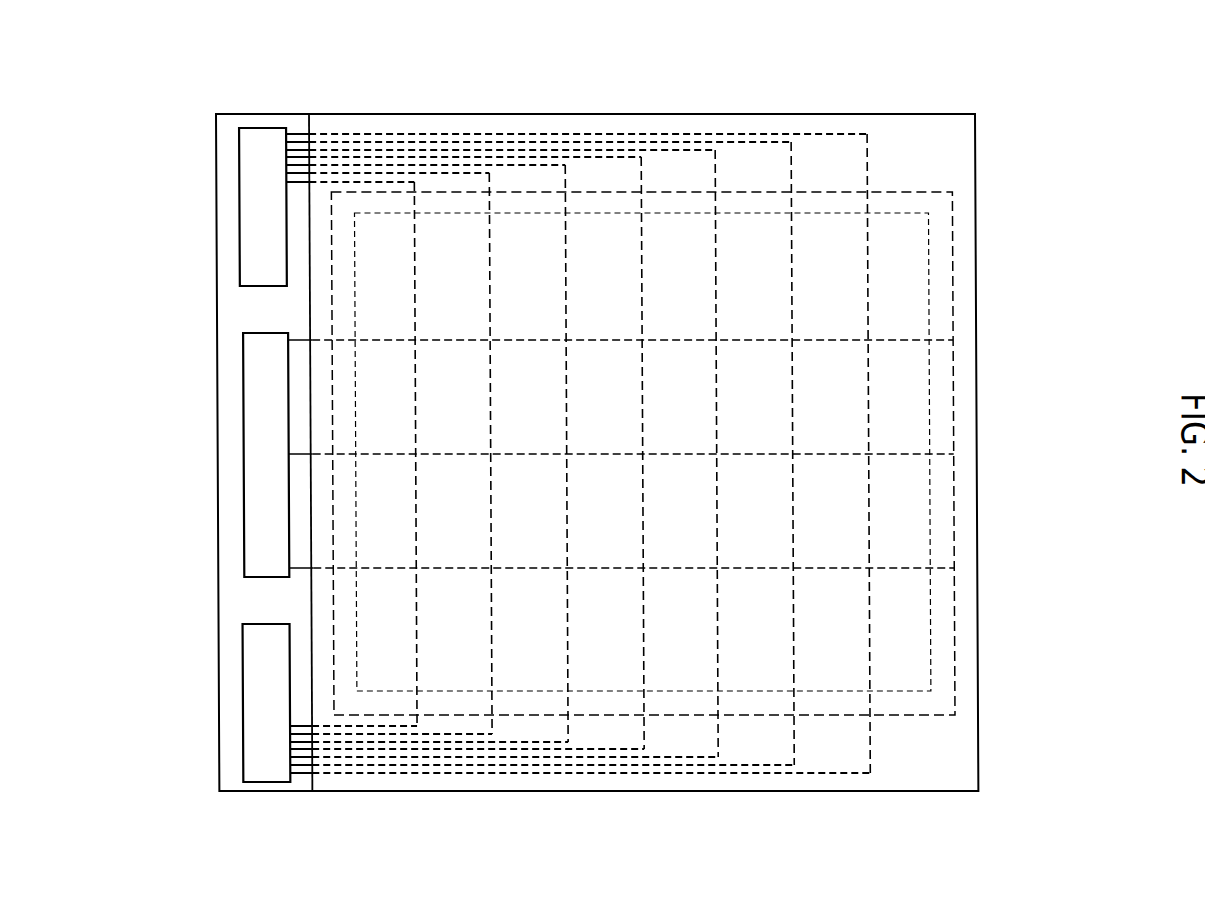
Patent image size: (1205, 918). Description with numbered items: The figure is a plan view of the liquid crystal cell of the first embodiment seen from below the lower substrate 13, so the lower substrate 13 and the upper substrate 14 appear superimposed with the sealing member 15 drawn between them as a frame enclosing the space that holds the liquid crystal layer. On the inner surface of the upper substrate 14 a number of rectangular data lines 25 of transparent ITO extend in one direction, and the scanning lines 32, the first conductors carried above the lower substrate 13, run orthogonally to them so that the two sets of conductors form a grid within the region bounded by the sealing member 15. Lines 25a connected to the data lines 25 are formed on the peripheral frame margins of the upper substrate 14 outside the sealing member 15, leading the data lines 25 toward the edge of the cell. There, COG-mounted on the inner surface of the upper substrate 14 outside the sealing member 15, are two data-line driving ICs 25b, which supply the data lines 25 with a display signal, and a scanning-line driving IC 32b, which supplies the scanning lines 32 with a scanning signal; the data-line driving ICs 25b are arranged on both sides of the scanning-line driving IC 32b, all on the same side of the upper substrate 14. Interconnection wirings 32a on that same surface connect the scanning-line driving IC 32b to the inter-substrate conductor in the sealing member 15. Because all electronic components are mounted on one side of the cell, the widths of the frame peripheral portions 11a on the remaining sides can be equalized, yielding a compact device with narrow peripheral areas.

The frame peripheral portion 11a is at (474, 122).
The lower substrate 13 is at (968, 152).
The upper substrate 14 is at (232, 308).
The sealing member 15 is at (943, 292).
The data line 25 is at (868, 237).
The line 25a is at (687, 133).
The data-line driving IC 25b is at (248, 163).
The scanning line 32 is at (913, 340).
The interconnection wiring 32a is at (298, 572).
The scanning-line driving IC 32b is at (252, 443).